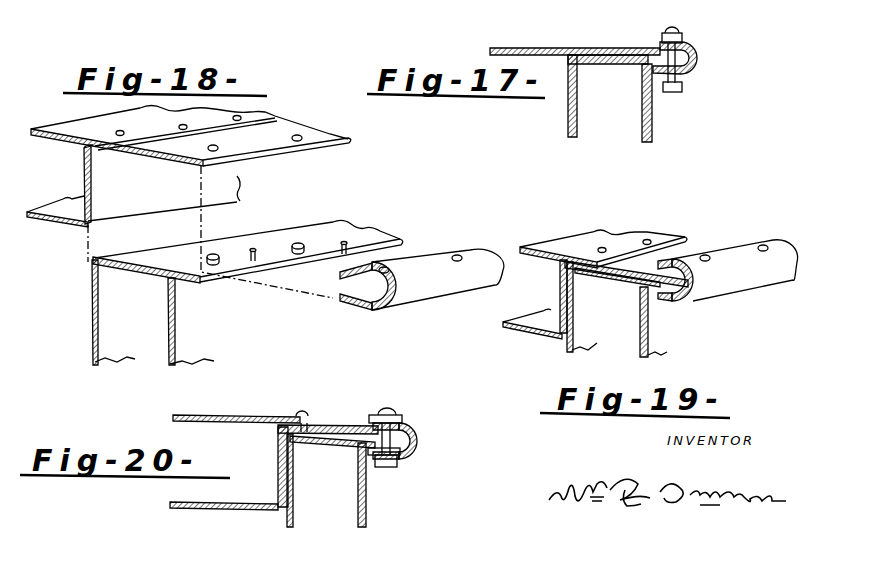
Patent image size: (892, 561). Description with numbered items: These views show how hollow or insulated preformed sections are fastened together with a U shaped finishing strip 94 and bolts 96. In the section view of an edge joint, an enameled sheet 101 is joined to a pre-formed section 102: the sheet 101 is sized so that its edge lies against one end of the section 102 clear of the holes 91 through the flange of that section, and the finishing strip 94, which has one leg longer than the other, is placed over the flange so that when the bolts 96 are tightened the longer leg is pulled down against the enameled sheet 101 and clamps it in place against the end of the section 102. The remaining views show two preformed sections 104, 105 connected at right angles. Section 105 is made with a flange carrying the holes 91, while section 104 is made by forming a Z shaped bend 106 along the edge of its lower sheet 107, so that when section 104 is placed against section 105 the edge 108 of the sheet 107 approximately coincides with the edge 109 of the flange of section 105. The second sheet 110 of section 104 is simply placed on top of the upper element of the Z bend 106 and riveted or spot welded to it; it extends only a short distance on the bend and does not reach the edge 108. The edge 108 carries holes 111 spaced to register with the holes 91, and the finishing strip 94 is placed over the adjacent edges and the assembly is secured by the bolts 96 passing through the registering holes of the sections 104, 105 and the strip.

In FIG. 18, the holes 91 is at (215, 255).
In FIG. 18, the U shaped finishing strip 94 is at (417, 288).
In FIG. 17, the U shaped finishing strip 94 is at (695, 70).
In FIG. 19, the U shaped finishing strip 94 is at (727, 272).
In FIG. 20, the U shaped finishing strip 94 is at (418, 438).
In FIG. 17, the bolts 96 is at (662, 36).
In FIG. 20, the bolts 96 is at (380, 410).
In FIG. 17, the enameled sheet 101 is at (552, 49).
In FIG. 17, the pre-formed section 102 is at (610, 98).
In FIG. 18, the preformed section 104 is at (180, 221).
In FIG. 19, the preformed section 104 is at (599, 296).
In FIG. 20, the preformed section 104 is at (303, 466).
In FIG. 18, the preformed section 105 is at (153, 311).
In FIG. 19, the preformed section 105 is at (617, 309).
In FIG. 20, the preformed section 105 is at (331, 480).
In FIG. 18, the Z shaped bend 106 is at (92, 180).
In FIG. 19, the Z shaped bend 106 is at (555, 327).
In FIG. 20, the Z shaped bend 106 is at (277, 472).
In FIG. 18, the lower sheet 107 is at (63, 219).
In FIG. 18, the edge of the lower sheet 108 is at (328, 142).
In FIG. 18, the edge of the flange 109 is at (377, 241).
In FIG. 18, the second sheet 110 is at (52, 128).
In FIG. 19, the second sheet 110 is at (580, 243).
In FIG. 20, the second sheet 110 is at (257, 417).
In FIG. 18, the holes 111 is at (216, 146).